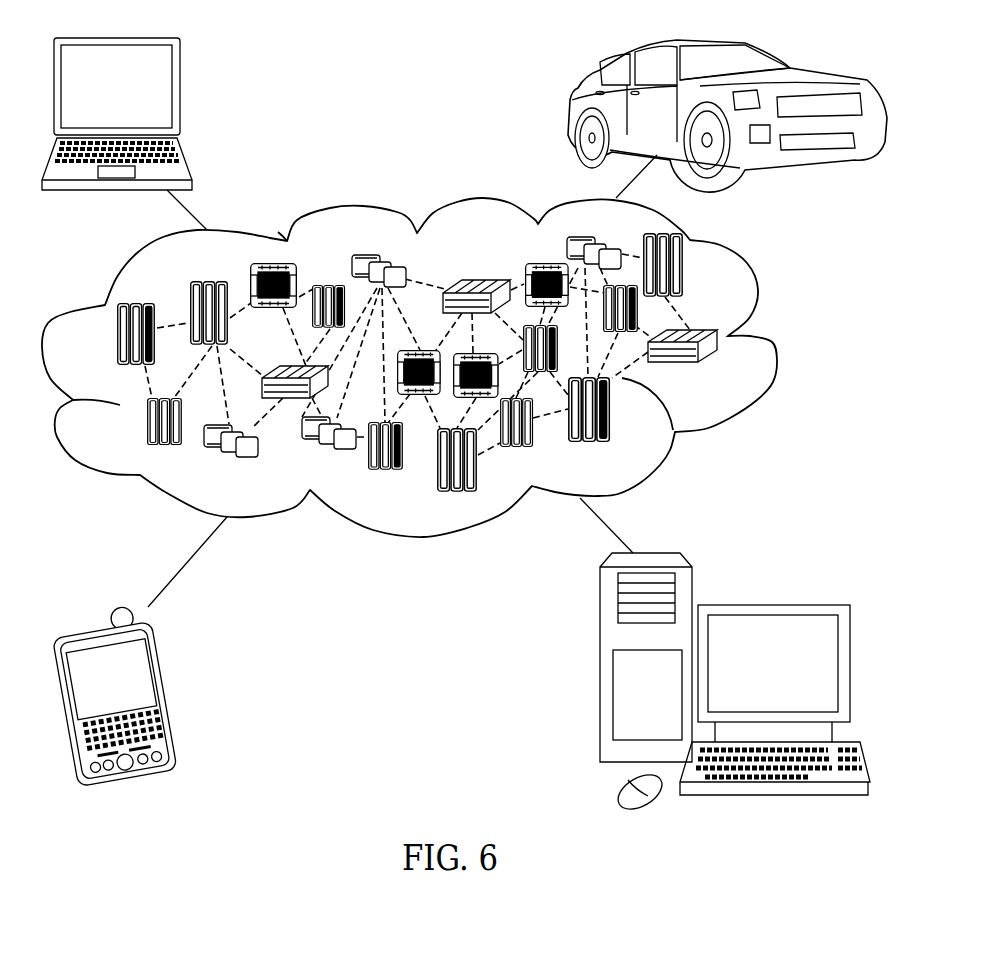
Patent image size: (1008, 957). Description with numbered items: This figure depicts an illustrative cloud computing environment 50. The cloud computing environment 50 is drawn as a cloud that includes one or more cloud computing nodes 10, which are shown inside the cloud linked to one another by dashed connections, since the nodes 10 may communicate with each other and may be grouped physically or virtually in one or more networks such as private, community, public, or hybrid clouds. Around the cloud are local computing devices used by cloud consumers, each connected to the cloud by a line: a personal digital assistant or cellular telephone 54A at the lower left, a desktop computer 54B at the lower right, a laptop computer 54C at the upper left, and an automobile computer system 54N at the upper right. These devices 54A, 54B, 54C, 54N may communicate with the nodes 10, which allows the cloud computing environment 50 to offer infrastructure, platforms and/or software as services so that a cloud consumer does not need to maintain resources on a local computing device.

The cloud computing nodes 10 is at (716, 367).
The cloud computing environment 50 is at (772, 343).
The personal digital assistant (PDA) or cellular telephone 54A is at (168, 691).
The desktop computer 54B is at (772, 604).
The laptop computer 54C is at (181, 97).
The automobile computer system 54N is at (572, 112).